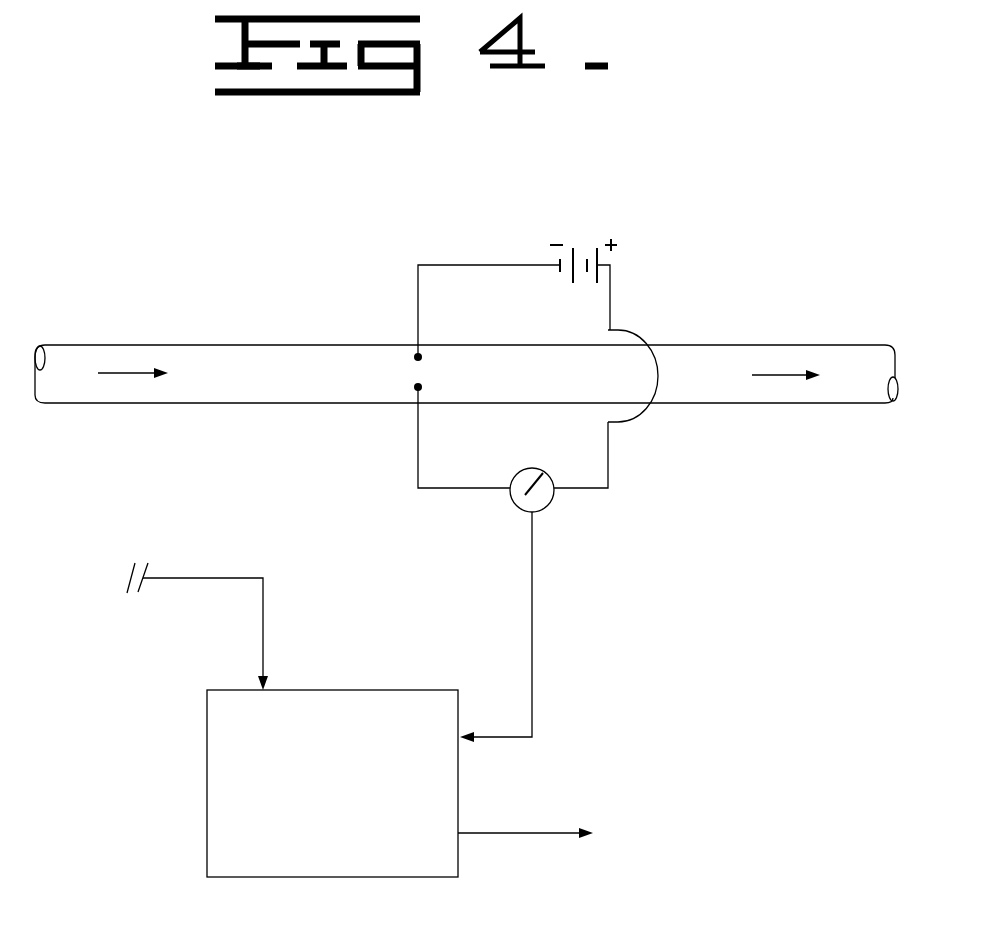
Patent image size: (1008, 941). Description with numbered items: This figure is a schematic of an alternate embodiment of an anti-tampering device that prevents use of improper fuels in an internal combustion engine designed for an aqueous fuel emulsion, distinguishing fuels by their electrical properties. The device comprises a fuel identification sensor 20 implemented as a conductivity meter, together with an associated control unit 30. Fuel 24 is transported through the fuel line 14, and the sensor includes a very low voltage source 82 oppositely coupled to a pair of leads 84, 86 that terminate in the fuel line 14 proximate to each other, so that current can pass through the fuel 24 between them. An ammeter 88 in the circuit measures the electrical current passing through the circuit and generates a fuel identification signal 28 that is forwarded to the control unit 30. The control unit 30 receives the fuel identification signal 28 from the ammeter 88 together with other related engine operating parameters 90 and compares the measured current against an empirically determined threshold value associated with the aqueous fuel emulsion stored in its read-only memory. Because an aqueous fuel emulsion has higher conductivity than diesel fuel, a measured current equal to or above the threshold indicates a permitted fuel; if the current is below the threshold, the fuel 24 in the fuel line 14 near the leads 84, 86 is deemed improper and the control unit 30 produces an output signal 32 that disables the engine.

The fuel line 14 is at (705, 345).
The fuel identification sensor 20 is at (215, 215).
The fuel 24 is at (318, 386).
The fuel identification signal 28 is at (530, 610).
The control unit 30 is at (343, 845).
The output signal 32 is at (503, 833).
The very low voltage source 82 is at (598, 256).
The lead 84 is at (418, 302).
The lead 86 is at (418, 437).
The ammeter 88 is at (516, 506).
The engine operating parameters 90 is at (208, 578).